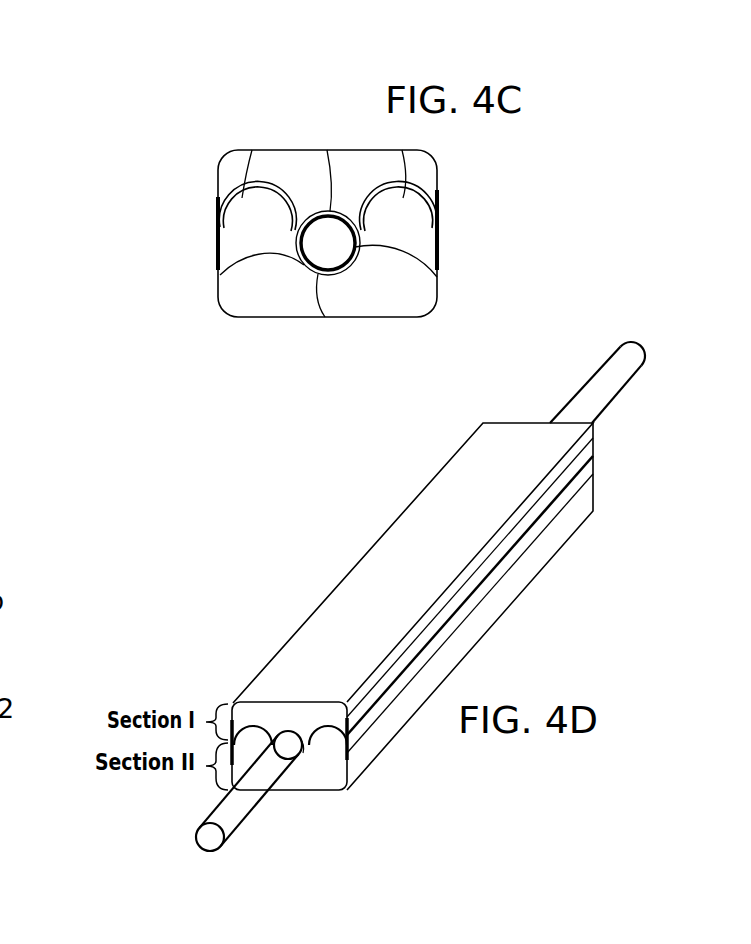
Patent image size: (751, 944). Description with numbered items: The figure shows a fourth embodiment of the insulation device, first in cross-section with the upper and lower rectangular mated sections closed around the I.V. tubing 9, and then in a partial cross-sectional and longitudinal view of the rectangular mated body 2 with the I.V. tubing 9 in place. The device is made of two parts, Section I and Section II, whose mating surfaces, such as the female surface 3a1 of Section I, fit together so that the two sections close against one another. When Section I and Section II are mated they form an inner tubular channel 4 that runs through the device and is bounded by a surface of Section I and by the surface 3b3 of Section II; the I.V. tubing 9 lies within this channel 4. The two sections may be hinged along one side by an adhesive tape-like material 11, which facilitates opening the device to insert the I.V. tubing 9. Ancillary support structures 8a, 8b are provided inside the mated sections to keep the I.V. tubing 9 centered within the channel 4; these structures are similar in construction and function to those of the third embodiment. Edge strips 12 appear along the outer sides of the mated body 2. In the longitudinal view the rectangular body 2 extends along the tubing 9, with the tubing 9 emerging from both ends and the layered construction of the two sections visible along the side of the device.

In FIG. 4D, the cable 2 is at (364, 553).
In FIG. 4C, the inner tubular channel 4 is at (296, 236).
In FIG. 4C, the I.V. tubing 9 is at (347, 234).
In FIG. 4D, the I.V. tubing 9 is at (650, 342).
In FIG. 4C, the adhesive tape-like material 11 is at (212, 200).
In FIG. 4C, the electrode strip 12 is at (443, 193).
In FIG. 4D, the electrode strip 12 is at (604, 457).
In FIG. 4C, the female surface 3a1 is at (241, 197).
In FIG. 4C, the surface of Section II 3b3 is at (307, 273).
In FIG. 4C, the ancillary support structure 8a is at (324, 292).
In FIG. 4C, the ancillary support structure 8b is at (400, 176).